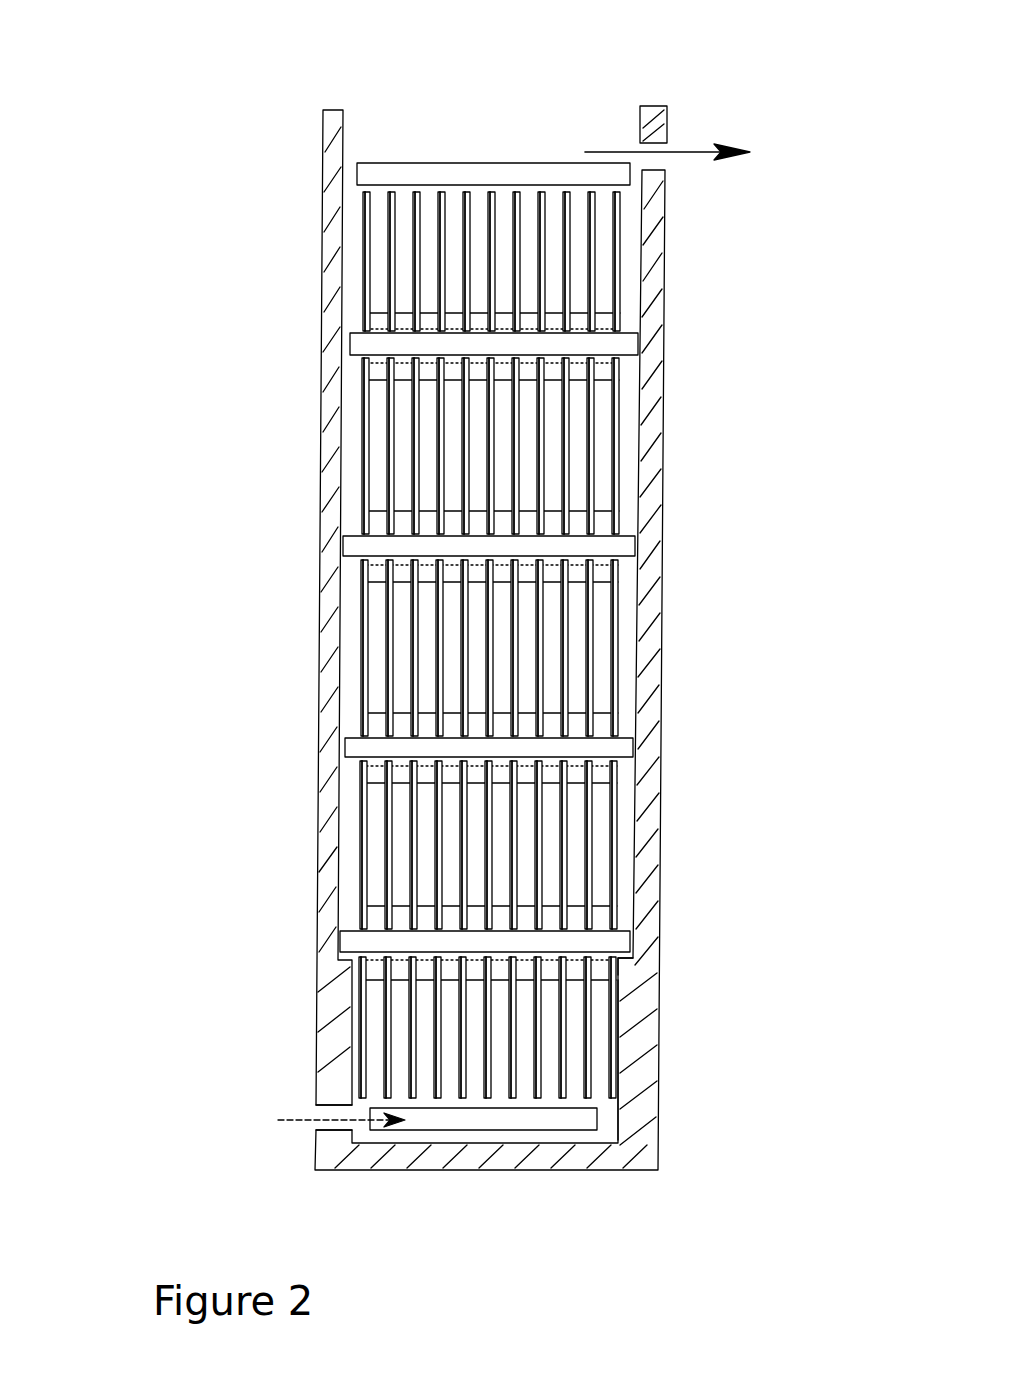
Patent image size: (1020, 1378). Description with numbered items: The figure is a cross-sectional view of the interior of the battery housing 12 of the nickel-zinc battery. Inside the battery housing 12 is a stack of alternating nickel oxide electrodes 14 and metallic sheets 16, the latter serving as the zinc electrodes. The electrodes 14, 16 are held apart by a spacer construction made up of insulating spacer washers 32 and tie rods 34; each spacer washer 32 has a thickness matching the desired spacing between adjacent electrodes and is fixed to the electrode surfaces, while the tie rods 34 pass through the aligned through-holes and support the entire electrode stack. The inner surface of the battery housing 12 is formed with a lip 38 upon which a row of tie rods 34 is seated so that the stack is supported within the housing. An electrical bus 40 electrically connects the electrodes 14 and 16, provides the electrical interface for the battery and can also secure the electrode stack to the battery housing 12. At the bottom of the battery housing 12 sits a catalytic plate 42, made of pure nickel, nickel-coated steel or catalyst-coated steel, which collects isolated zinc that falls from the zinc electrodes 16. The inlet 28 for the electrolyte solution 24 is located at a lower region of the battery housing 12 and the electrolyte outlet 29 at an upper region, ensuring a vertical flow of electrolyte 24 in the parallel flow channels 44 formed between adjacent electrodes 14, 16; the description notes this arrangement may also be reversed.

The battery housing 12 is at (666, 358).
The nickel oxide electrodes 14 is at (392, 197).
The metallic sheets 16 is at (418, 197).
The electrolyte solution 24 is at (705, 163).
The inlet 28 is at (315, 1131).
The electrolyte outlet 29 is at (673, 140).
The insulating spacer washers 32 is at (361, 369).
The tie rods 34 is at (349, 341).
The lip 38 is at (627, 962).
The electrical bus 40 is at (348, 161).
The catalytic plate 42 is at (567, 1118).
The gap 44 is at (577, 1040).